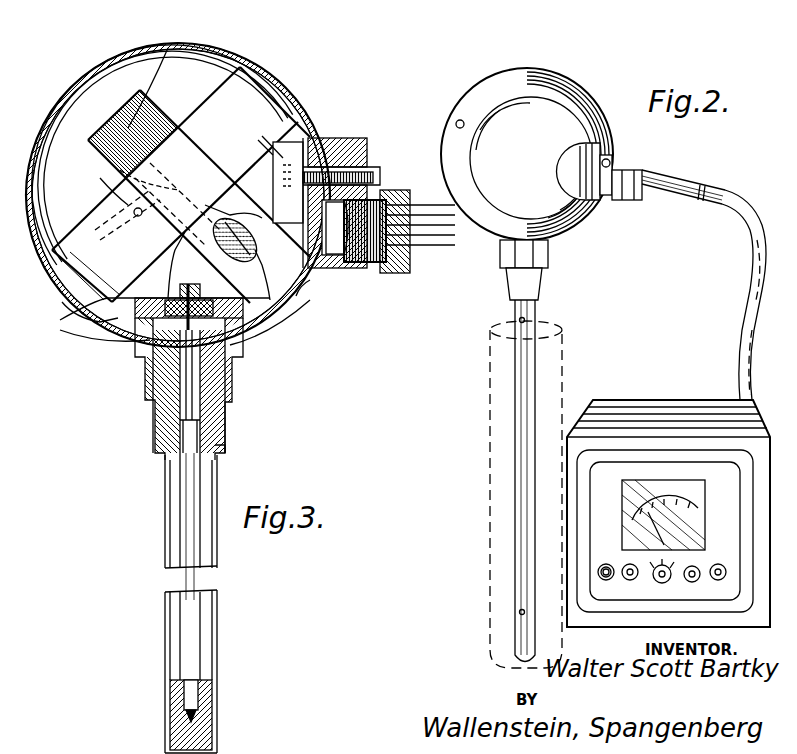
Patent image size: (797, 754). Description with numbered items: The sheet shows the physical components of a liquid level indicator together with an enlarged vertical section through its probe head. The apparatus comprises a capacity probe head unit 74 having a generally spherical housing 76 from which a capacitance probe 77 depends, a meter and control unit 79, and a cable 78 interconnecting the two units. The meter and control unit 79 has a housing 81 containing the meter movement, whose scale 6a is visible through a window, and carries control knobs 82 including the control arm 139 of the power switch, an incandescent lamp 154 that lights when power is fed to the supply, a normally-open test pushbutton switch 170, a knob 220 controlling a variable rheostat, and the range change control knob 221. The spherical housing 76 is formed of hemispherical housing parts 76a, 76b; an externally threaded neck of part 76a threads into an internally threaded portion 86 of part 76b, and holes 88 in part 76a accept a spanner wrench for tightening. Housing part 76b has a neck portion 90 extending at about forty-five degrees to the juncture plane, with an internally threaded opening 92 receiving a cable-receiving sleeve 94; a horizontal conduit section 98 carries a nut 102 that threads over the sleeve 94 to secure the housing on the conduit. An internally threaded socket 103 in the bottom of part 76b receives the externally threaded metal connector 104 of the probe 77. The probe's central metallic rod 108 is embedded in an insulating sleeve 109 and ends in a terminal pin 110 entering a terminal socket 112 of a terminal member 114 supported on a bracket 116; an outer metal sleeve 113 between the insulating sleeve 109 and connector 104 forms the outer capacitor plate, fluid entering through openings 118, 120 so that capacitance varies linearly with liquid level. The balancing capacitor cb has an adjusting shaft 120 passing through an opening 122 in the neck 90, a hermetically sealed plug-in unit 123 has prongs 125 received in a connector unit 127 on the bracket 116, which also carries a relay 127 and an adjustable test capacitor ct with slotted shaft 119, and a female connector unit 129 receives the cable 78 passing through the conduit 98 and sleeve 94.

In FIG. 3, the capacity probe head unit 74 is at (142, 398).
In FIG. 2, the capacity probe head unit 74 is at (592, 226).
In FIG. 3, the spherical probe head housing 76 is at (56, 120).
In FIG. 2, the spherical probe head housing 76 is at (498, 66).
In FIG. 3, the hemispherical housing part 76a is at (92, 82).
In FIG. 2, the hemispherical housing part 76a is at (560, 74).
In FIG. 3, the hemispherical housing part 76b is at (285, 326).
In FIG. 2, the hemispherical housing part 76b is at (505, 238).
In FIG. 3, the capacitance probe 77 is at (152, 652).
In FIG. 2, the capacitance probe 77 is at (512, 472).
In FIG. 2, the cable 78 is at (737, 244).
In FIG. 2, the meter and control unit 79 is at (600, 406).
In FIG. 2, the housing 81 is at (662, 414).
In FIG. 3, the control knobs 82 is at (70, 306).
In FIG. 2, the control knobs 82 is at (630, 590).
In FIG. 3, the internally threaded portion 86 is at (95, 318).
In FIG. 2, the holes 88 is at (456, 120).
In FIG. 3, the neck portion 90 is at (362, 140).
In FIG. 3, the internally threaded opening 92 is at (362, 262).
In FIG. 3, the cable-receiving sleeve 94 is at (392, 206).
In FIG. 2, the cable-receiving sleeve 94 is at (616, 170).
In FIG. 3, the horizontal conduit section 98 is at (420, 210).
In FIG. 2, the horizontal conduit section 98 is at (702, 203).
In FIG. 3, the nut 102 is at (410, 270).
In FIG. 2, the nut 102 is at (640, 180).
In FIG. 3, the internally threaded socket 103 is at (146, 370).
In FIG. 3, the metal connector 104 is at (240, 380).
In FIG. 3, the central metallic rod 108 is at (226, 447).
In FIG. 3, the insulating sleeve 109 is at (232, 400).
In FIG. 3, the terminal pin 110 is at (189, 297).
In FIG. 3, the terminal socket 112 is at (199, 196).
In FIG. 3, the outer metal sleeve 113 is at (165, 490).
In FIG. 3, the terminal member 114 is at (112, 360).
In FIG. 3, the bracket 116 is at (248, 350).
In FIG. 3, the opening 118 is at (216, 477).
In FIG. 3, the slotted shaft 119 is at (134, 210).
In FIG. 3, the adjusting shaft 120 is at (373, 175).
In FIG. 2, the adjusting shaft 120 is at (617, 150).
In FIG. 3, the opening 122 is at (335, 160).
In FIG. 3, the plug-in unit 123 is at (168, 48).
In FIG. 3, the prongs 125 is at (296, 300).
In FIG. 3, the connector unit 127 is at (125, 210).
In FIG. 3, the female connector unit 129 is at (356, 200).
In FIG. 2, the control arm 139 is at (601, 584).
In FIG. 2, the incandescent lamp 154 is at (605, 560).
In FIG. 2, the test pushbutton switch 170 is at (722, 560).
In FIG. 2, the knob 220 is at (693, 582).
In FIG. 2, the range change control knob 221 is at (662, 583).
In FIG. 2, the scale 6a is at (702, 496).
In FIG. 3, the balancing capacitor cb is at (290, 150).
In FIG. 3, the test capacitor ct is at (110, 180).